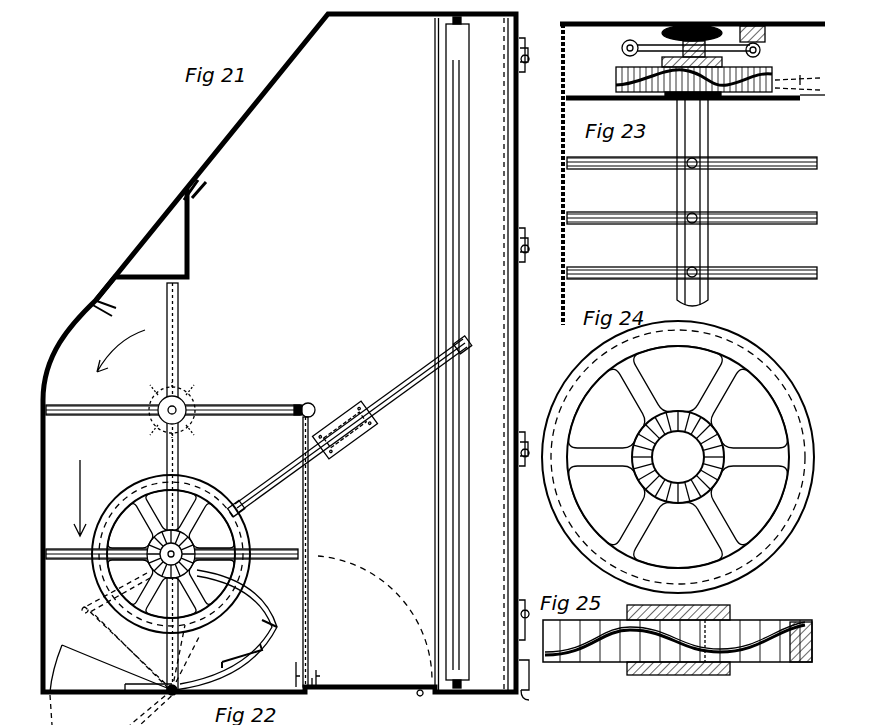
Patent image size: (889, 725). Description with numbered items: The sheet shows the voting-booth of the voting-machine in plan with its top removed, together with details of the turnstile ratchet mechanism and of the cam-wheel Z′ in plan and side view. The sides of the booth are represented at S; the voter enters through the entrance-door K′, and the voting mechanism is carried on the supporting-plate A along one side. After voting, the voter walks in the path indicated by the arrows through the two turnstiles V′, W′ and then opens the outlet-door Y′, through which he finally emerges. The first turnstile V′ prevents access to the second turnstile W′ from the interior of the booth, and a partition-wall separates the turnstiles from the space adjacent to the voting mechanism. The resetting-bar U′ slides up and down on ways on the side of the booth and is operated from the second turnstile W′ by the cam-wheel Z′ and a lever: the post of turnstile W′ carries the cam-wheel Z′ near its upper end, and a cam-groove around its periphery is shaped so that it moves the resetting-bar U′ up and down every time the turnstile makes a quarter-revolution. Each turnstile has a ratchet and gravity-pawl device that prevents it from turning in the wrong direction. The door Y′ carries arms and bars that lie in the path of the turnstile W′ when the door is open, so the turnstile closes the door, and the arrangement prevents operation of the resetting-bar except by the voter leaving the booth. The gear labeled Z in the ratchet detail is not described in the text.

In FIG. 21, the sides of the booth S is at (279, 367).
In FIG. 21, the supporting-plate A is at (423, 354).
In FIG. 21, the door P is at (507, 359).
In FIG. 21, the resetting-bar U′ is at (462, 455).
In FIG. 21, the turnstile W′ is at (173, 486).
In FIG. 23, the turnstile W′ is at (692, 203).
In FIG. 21, the turnstile V′ is at (182, 392).
In FIG. 21, the cam-wheel Z′ is at (171, 544).
In FIG. 24, the cam-wheel Z′ is at (678, 457).
In FIG. 25, the cam-wheel Z′ is at (772, 620).
In FIG. 21, the entrance-door K′ is at (370, 684).
In FIG. 21, the outlet-door Y′ is at (64, 710).
In FIG. 23, the cam gear Z is at (679, 77).